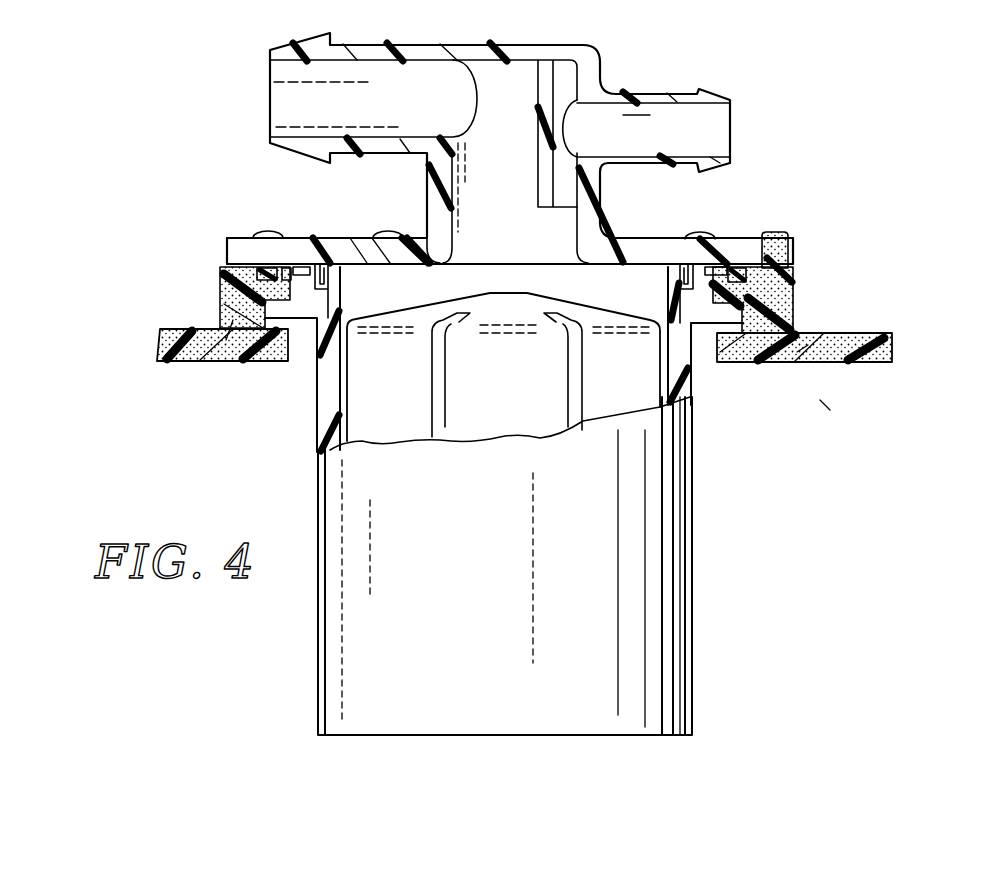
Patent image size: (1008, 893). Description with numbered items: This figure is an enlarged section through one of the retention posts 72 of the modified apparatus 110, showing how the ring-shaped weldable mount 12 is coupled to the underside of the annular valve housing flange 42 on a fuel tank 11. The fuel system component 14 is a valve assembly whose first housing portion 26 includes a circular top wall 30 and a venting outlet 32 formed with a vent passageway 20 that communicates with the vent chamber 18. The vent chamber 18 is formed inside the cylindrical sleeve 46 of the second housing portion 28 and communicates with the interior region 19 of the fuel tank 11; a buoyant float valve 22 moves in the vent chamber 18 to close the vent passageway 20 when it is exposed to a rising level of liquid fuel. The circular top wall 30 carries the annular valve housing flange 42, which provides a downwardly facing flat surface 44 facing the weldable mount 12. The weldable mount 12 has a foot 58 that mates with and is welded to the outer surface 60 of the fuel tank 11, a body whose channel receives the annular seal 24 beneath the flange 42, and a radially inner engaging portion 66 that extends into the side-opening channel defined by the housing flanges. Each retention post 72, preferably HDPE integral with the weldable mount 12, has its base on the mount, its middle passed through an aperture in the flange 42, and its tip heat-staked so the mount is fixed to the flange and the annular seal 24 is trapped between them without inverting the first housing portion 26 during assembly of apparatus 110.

The apparatus 110 is at (756, 58).
The first housing portion 26 is at (621, 45).
The venting outlet 32 is at (478, 44).
The fuel system component 14 is at (629, 81).
The vent passageway 20 is at (455, 215).
The vent chamber 18 is at (596, 282).
The annular valve housing flange 42 is at (294, 250).
The retention post 72 is at (268, 226).
The circular top wall 30 is at (238, 226).
The annular seal 24 is at (742, 282).
The downwardly facing flat surface 44 is at (223, 268).
The weldable mount 12 is at (208, 302).
The foot 58 is at (232, 322).
The engaging portion 66 is at (314, 285).
The cylindrical sleeve 46 is at (323, 417).
The float valve 22 is at (503, 410).
The second housing portion 28 is at (706, 611).
The outer surface 60 is at (823, 333).
The fuel tank 11 is at (797, 352).
The interior region 19 is at (822, 398).